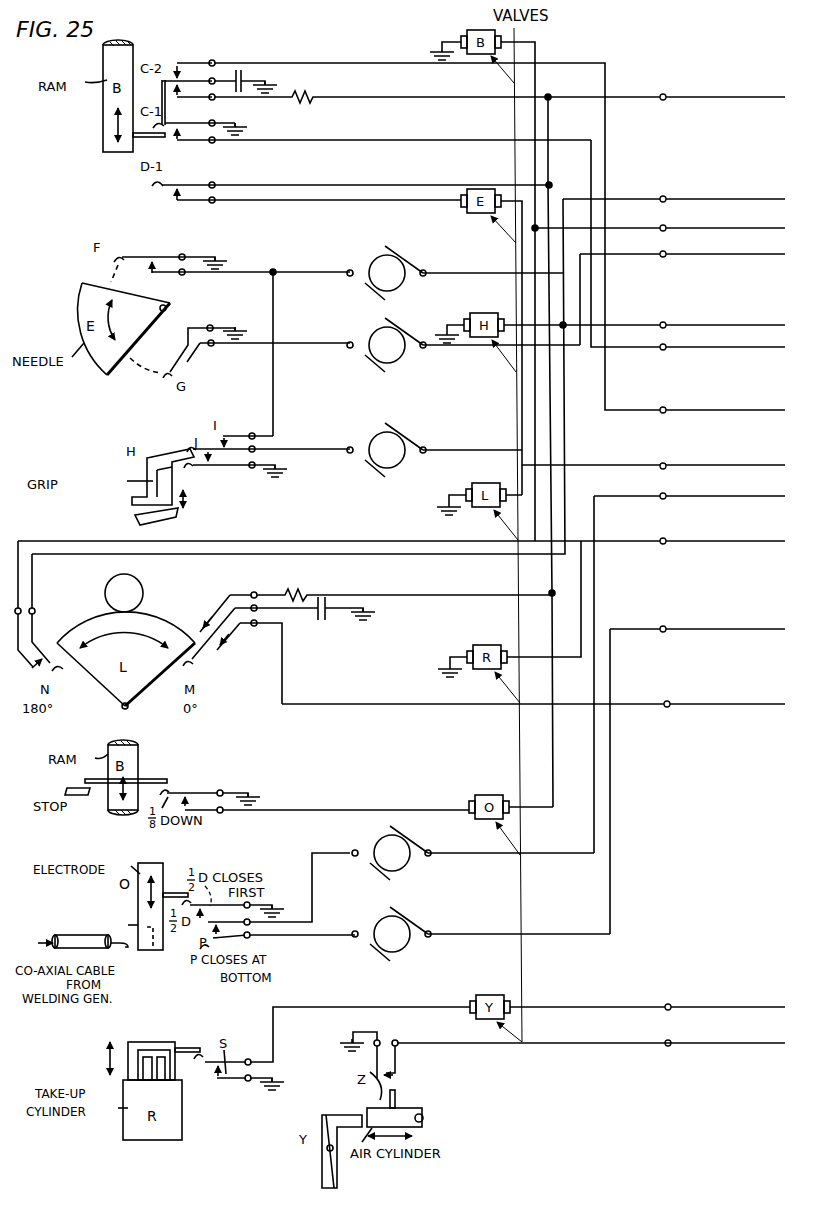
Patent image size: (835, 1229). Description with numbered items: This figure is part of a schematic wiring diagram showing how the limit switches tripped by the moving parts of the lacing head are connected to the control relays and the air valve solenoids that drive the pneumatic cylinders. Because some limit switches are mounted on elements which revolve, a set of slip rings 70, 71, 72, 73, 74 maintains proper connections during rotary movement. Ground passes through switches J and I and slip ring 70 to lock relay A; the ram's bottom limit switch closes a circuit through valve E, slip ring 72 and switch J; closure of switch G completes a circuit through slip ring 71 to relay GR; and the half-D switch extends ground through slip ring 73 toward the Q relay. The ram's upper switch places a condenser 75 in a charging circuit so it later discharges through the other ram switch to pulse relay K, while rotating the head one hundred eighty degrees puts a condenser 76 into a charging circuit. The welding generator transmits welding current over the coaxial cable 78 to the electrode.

The slip ring 70 is at (396, 283).
The slip ring 71 is at (396, 355).
The slip ring 72 is at (396, 460).
The slip ring 73 is at (401, 863).
The slip ring 74 is at (401, 944).
The condenser 75 is at (241, 74).
The condenser 76 is at (322, 627).
The coaxial cable 78 is at (77, 940).